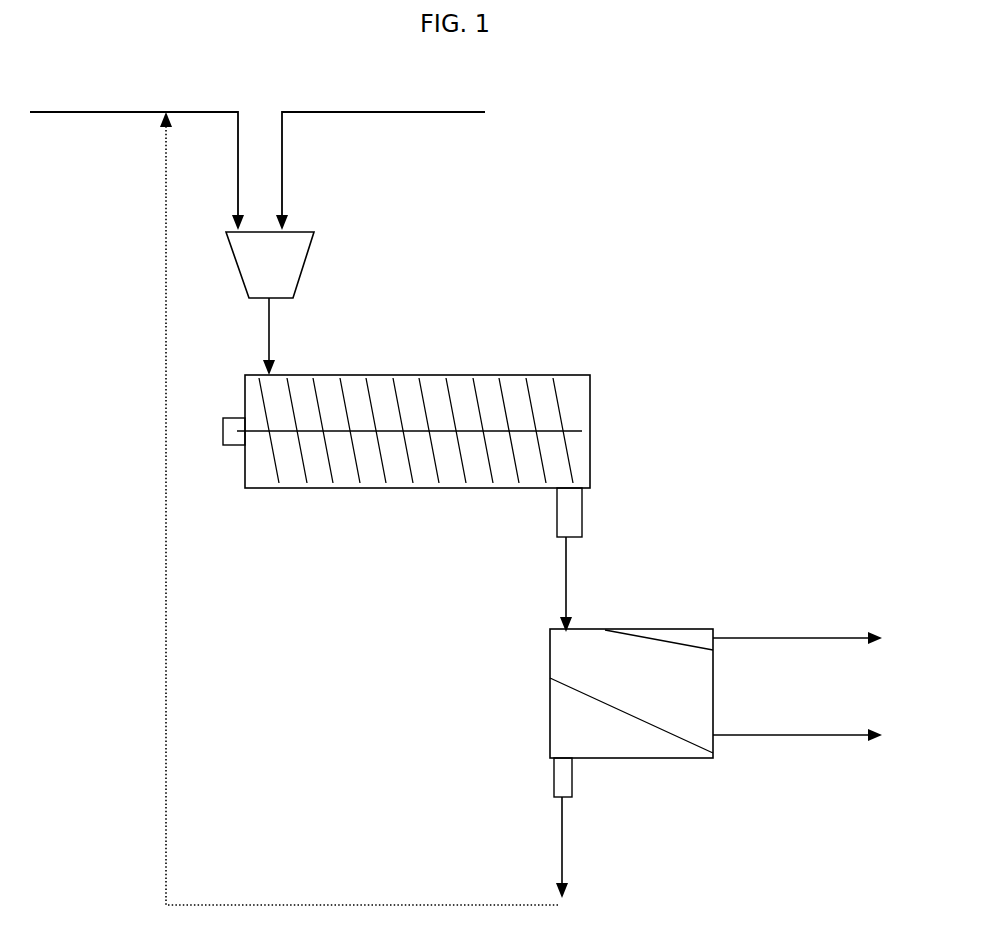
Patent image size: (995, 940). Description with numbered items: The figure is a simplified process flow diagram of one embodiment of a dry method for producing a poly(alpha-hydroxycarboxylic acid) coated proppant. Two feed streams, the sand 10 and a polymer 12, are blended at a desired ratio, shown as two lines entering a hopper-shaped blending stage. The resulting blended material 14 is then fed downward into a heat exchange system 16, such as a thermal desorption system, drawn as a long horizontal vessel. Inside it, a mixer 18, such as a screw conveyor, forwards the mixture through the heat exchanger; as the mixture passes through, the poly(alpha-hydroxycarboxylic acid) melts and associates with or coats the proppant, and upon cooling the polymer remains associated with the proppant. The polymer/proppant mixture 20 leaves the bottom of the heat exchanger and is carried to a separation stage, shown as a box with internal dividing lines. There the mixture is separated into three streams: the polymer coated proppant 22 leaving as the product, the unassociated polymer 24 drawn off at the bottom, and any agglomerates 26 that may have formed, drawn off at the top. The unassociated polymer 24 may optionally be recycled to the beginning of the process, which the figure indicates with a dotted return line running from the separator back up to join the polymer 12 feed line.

The sand 10 is at (380, 155).
The polymer 12 is at (137, 155).
The blended material 14 is at (270, 303).
The heat exchange system 16 is at (413, 375).
The mixer 18 is at (557, 415).
The polymer/proppant mixture 20 is at (581, 560).
The polymer coated proppant 22 is at (797, 723).
The unassociated polymer 24 is at (382, 508).
The agglomerates 26 is at (797, 626).